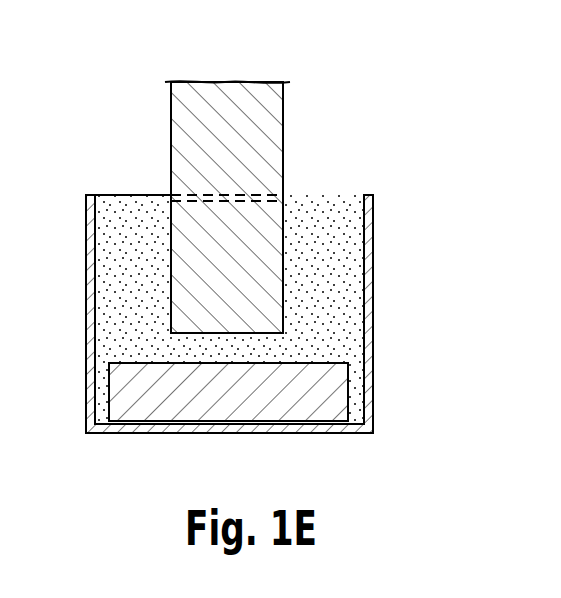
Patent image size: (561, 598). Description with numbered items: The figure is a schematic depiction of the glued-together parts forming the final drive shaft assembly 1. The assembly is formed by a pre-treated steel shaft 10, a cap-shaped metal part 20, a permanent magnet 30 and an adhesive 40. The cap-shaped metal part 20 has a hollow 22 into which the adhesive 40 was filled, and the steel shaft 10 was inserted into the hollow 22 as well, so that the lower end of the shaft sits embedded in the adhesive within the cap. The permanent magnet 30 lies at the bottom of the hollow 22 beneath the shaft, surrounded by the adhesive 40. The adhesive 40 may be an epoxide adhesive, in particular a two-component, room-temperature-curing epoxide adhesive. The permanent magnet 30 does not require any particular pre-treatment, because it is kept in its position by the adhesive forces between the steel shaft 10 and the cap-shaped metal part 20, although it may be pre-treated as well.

The drive shaft assembly 1 is at (254, 230).
The steel shaft 10 is at (262, 118).
The cap-shaped metal part 20 is at (367, 250).
The hollow 22 is at (125, 172).
The permanent magnet 30 is at (325, 397).
The adhesive 40 is at (345, 322).